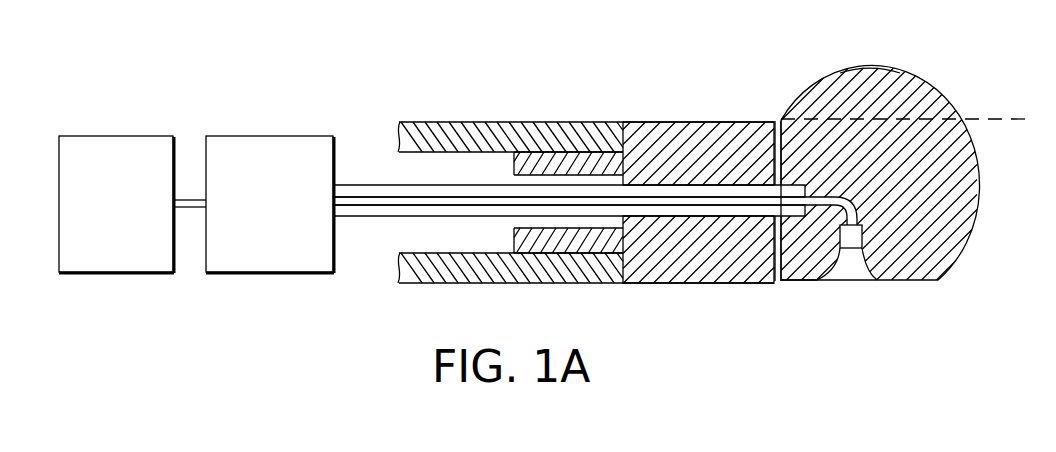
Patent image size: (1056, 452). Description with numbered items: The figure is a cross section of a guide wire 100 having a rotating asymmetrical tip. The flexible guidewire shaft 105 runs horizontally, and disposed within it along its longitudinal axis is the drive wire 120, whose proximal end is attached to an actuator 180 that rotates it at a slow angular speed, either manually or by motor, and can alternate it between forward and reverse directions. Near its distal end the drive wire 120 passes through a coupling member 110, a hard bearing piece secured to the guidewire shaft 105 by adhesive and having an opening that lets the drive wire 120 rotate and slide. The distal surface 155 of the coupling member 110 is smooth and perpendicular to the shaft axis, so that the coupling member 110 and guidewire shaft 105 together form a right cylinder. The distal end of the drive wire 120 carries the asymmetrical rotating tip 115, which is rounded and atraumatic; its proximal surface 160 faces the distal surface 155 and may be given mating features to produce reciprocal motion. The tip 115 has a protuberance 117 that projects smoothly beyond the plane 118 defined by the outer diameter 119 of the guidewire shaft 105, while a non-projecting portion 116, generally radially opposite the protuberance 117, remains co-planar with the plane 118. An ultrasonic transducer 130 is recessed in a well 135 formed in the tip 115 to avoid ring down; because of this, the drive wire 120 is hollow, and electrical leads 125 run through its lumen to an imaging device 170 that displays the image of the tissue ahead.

The guide wire 100 is at (448, 55).
The guidewire shaft 105 is at (507, 122).
The coupling member 110 is at (689, 122).
The asymmetrical rotating tip 115 is at (963, 178).
The non-projecting portion 116 is at (800, 281).
The protuberance 117 is at (880, 80).
The plane 118 is at (1006, 117).
The outer diameter 119 is at (642, 55).
The drive wire 120 is at (467, 216).
The electrical leads 125 is at (362, 198).
The ultrasonic transducer 130 is at (853, 233).
The well 135 is at (858, 270).
The distal surface 155 is at (773, 148).
The proximal surface 160 is at (782, 243).
The imaging device 170 is at (110, 135).
The actuator 180 is at (265, 135).